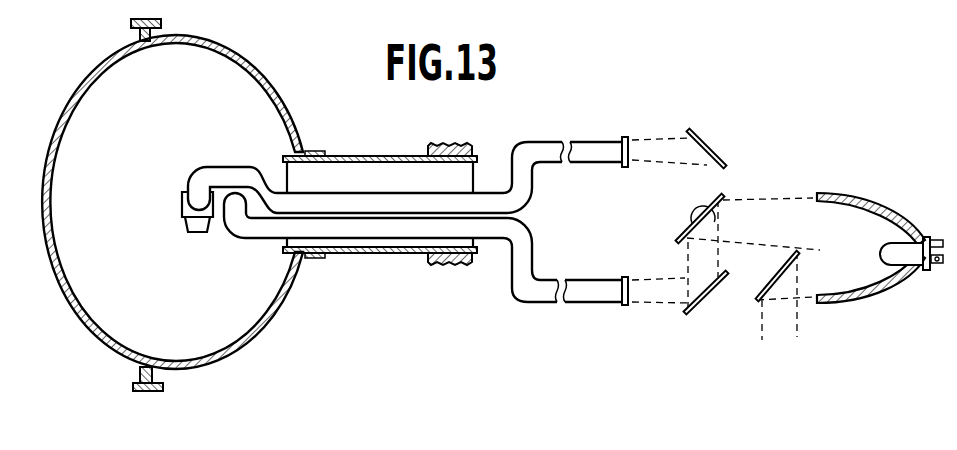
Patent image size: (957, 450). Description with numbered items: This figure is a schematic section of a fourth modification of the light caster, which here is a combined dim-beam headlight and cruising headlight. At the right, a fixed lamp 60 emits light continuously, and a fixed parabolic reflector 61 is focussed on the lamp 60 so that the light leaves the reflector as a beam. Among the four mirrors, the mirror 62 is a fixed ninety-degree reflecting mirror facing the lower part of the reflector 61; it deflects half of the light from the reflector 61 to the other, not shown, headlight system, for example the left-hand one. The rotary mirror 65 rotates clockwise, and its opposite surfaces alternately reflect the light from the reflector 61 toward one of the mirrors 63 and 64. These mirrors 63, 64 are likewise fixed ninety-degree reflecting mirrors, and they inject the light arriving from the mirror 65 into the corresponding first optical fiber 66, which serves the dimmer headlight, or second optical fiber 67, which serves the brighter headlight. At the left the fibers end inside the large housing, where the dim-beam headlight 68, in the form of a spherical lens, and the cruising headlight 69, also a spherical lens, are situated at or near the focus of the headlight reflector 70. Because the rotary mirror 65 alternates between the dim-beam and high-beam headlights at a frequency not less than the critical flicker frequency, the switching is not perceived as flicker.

The fixed lamp 60 is at (918, 270).
The fixed parabolic reflector 61 is at (890, 217).
The fixed 90°-reflecting mirror 62 is at (763, 283).
The fixed 90°-reflecting mirror 63 is at (720, 153).
The fixed 90°-reflecting mirror 64 is at (700, 307).
The rotary mirror 65 is at (678, 238).
The first optical fiber 66 is at (541, 152).
The second optical fiber 67 is at (538, 296).
The dim-beam headlight 68 is at (187, 203).
The cruising headlight 69 is at (237, 195).
The headlight reflector 70 is at (263, 82).